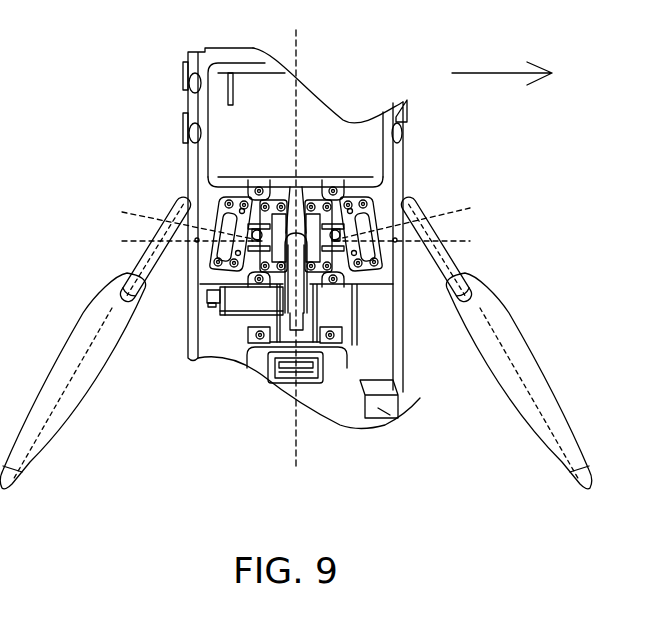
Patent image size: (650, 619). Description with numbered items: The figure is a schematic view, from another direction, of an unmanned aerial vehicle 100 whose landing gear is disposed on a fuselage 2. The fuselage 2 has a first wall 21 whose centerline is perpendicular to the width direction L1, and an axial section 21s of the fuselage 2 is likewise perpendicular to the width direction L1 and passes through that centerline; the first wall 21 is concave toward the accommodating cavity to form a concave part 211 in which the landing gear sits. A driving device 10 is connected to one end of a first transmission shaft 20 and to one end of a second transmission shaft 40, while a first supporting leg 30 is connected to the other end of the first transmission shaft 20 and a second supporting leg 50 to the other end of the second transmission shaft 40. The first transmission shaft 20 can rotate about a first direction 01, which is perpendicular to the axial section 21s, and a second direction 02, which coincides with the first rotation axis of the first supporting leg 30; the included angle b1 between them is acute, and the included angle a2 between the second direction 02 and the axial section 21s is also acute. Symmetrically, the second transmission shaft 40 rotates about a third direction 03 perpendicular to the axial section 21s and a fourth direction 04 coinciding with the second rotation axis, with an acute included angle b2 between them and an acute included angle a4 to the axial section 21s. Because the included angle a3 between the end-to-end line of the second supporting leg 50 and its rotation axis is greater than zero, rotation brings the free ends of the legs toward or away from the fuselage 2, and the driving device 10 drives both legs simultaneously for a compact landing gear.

The unmanned aerial vehicle 100 is at (92, 47).
The width direction L1 is at (509, 59).
The axial section 21s is at (298, 42).
The fuselage 2 is at (405, 110).
The first wall 21 is at (387, 148).
The concave part 211 is at (205, 192).
The included angle a2 is at (290, 197).
The included angle a4 is at (303, 197).
The included angle a3 is at (157, 224).
The first direction 01 is at (180, 243).
The second direction 02 is at (178, 219).
The third direction 03 is at (414, 238).
The fourth direction 04 is at (414, 219).
The included angle b1 is at (196, 242).
The included angle b2 is at (397, 241).
The first transmission shaft 20 is at (220, 262).
The second transmission shaft 40 is at (378, 272).
The driving device 10 is at (230, 311).
The first supporting leg 30 is at (62, 370).
The second supporting leg 50 is at (523, 362).